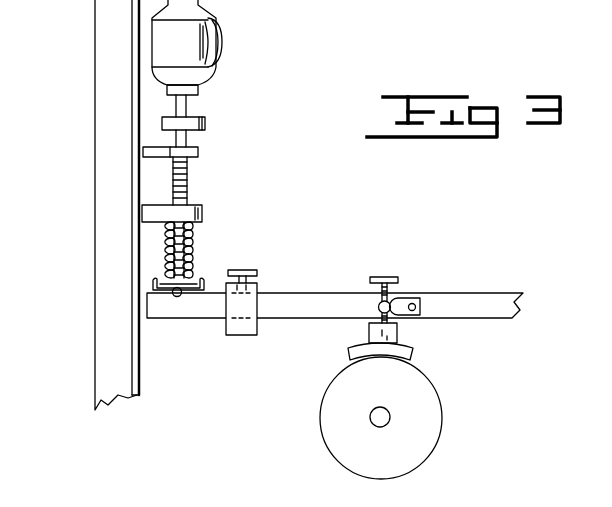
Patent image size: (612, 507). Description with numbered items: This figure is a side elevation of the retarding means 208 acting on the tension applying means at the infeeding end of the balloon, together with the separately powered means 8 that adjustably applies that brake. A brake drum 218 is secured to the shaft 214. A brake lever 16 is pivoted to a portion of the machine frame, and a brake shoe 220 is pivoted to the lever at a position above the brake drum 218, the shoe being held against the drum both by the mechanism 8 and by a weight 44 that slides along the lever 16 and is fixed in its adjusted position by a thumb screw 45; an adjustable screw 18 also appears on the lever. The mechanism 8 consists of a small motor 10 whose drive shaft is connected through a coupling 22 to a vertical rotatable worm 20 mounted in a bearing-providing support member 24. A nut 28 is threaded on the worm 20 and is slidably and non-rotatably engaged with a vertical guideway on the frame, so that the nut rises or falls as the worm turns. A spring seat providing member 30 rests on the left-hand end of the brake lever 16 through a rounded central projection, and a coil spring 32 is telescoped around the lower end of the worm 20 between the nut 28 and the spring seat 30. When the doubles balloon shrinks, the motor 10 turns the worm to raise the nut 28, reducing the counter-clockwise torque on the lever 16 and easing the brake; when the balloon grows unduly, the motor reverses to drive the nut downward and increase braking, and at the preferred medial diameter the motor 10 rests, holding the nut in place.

The separately powered means 8 is at (222, 163).
The small motor 10 is at (207, 43).
The brake lever 16 is at (322, 300).
The screw 18 is at (390, 290).
The vertical rotatable worm 20 is at (187, 193).
The coupling 22 is at (203, 122).
The support member 24 is at (140, 152).
The nut 28 is at (140, 213).
The spring seat providing member 30 is at (200, 277).
The coil spring 32 is at (195, 238).
The weight 44 is at (243, 308).
The thumb screw 45 is at (257, 282).
The retarding means 208 is at (412, 264).
The shaft 214 is at (387, 415).
The brake drum 218 is at (428, 430).
The brake shoe 220 is at (400, 350).